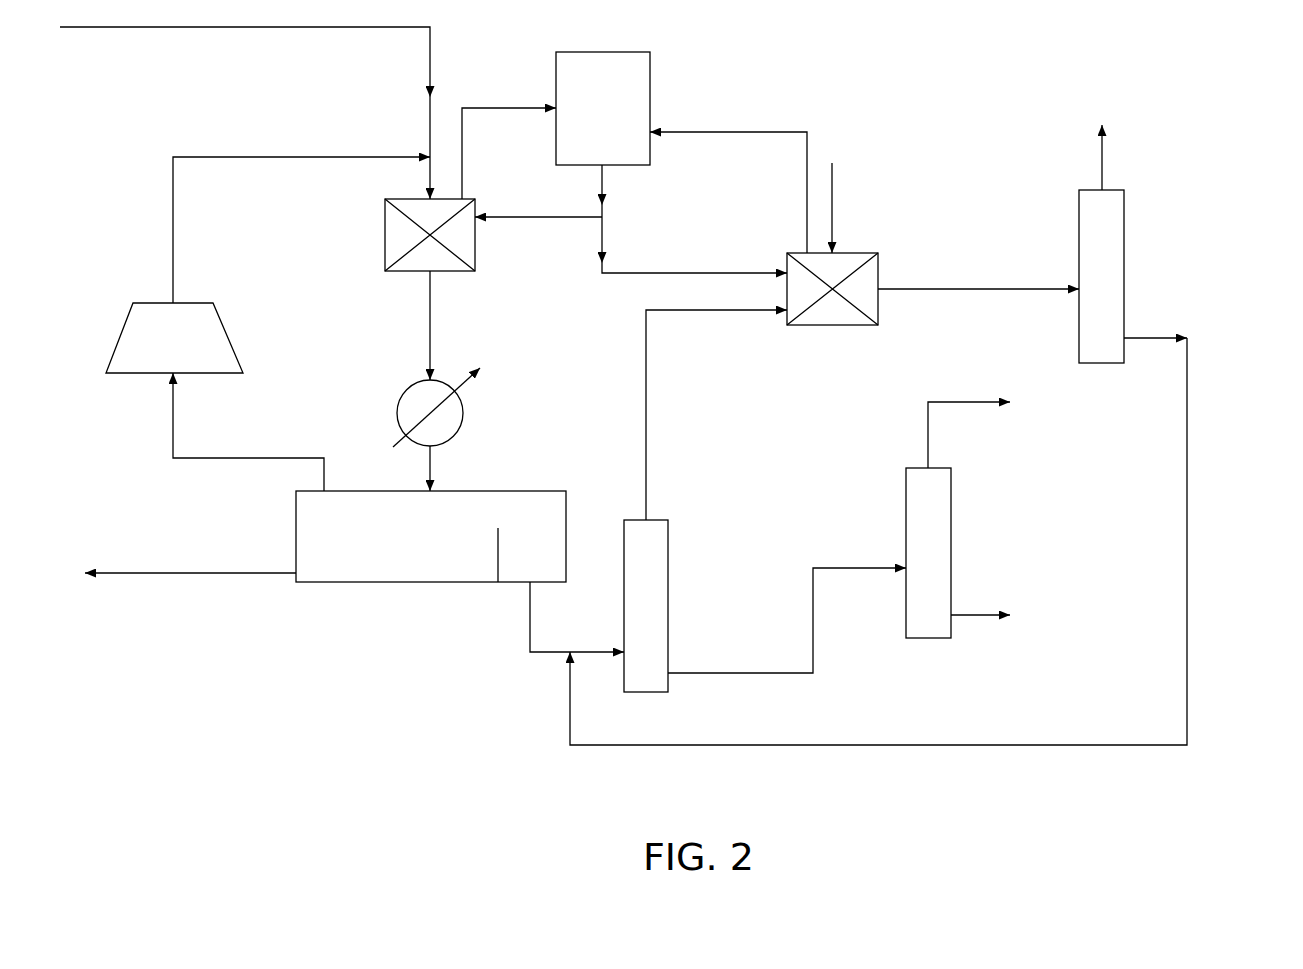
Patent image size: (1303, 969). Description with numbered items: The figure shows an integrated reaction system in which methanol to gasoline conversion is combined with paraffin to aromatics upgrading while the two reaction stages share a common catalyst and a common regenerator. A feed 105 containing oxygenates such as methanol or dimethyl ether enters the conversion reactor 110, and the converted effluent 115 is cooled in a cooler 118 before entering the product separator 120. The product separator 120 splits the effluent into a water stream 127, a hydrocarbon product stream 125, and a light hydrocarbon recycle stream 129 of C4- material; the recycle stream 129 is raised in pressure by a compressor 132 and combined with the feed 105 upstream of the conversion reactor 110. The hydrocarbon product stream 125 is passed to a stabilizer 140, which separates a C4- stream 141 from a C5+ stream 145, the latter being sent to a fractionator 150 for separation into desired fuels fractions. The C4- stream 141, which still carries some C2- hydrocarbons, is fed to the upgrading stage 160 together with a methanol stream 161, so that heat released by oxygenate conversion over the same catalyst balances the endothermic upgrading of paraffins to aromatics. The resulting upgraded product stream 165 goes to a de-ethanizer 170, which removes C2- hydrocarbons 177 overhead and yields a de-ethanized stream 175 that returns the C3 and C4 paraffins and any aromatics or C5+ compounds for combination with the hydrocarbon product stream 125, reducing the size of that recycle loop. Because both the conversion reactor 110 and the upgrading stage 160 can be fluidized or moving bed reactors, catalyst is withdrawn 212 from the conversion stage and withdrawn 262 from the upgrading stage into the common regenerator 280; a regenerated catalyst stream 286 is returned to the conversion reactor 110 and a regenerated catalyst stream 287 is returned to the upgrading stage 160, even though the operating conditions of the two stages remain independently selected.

The feed 105 is at (428, 63).
The conversion reactor 110 is at (477, 245).
The converted effluent 115 is at (430, 338).
The cooler 118 is at (397, 415).
The product separator 120 is at (428, 550).
The hydrocarbon product stream 125 is at (528, 618).
The water stream 127 is at (165, 573).
The light hydrocarbon recycle stream 129 is at (172, 427).
The compressor 132 is at (195, 355).
The stabilizer 140 is at (668, 555).
The C4- stream 141 is at (646, 407).
The C5+ stream 145 is at (815, 655).
The fractionator 150 is at (906, 493).
The upgrading stage 160 is at (826, 326).
The methanol stream 161 is at (838, 177).
The upgraded product stream 165 is at (992, 289).
The de-ethanizer 170 is at (1124, 228).
The de-ethanized stream 175 is at (1187, 425).
The C2- hydrocarbons 177 is at (1100, 163).
The withdrawn catalyst stream 212 is at (520, 108).
The withdrawn catalyst stream 262 is at (733, 132).
The common regenerator 280 is at (625, 120).
The regenerated catalyst stream 286 is at (563, 217).
The regenerated catalyst stream 287 is at (727, 273).